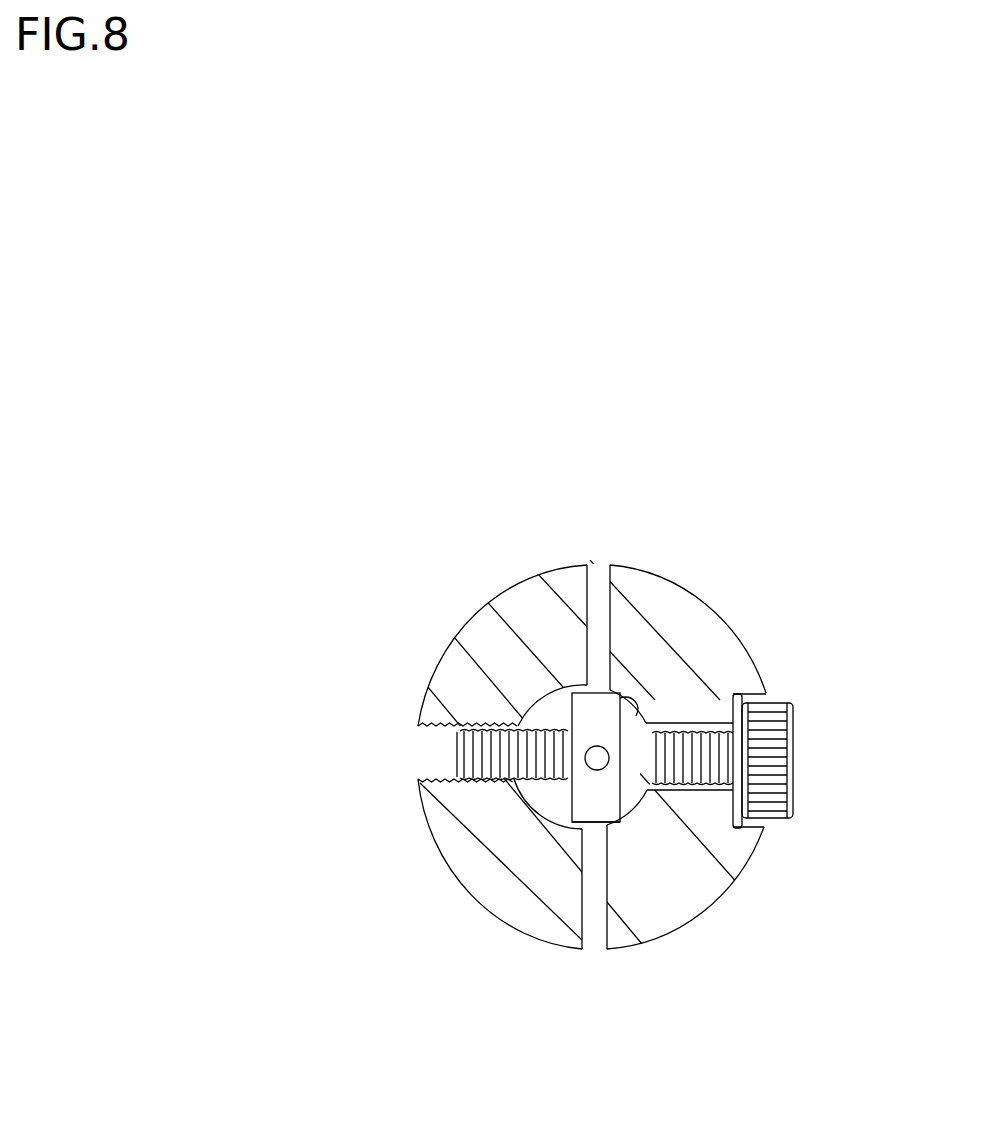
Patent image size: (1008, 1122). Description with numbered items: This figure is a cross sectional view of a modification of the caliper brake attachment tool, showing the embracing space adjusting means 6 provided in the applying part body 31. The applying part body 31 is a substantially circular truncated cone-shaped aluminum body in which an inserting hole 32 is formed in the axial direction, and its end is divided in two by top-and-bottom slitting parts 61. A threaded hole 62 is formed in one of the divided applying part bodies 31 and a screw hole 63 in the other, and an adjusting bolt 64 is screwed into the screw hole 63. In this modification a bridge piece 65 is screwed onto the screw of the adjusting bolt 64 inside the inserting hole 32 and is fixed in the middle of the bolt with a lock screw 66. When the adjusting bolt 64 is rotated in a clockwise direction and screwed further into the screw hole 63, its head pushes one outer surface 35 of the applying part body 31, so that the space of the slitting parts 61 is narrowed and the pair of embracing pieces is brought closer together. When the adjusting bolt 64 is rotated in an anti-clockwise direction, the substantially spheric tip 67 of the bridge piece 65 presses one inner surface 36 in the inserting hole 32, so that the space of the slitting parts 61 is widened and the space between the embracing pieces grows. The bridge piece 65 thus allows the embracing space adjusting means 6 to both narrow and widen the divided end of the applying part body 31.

The embracing space adjusting means 6 is at (800, 502).
The applying part body 31 is at (497, 642).
The inserting hole 32 is at (578, 836).
The outer surface 35 is at (747, 797).
The inner surface 36 is at (628, 703).
The slitting parts 61 is at (598, 572).
The threaded hole 62 is at (632, 795).
The screw hole 63 is at (430, 760).
The adjusting bolt 64 is at (792, 733).
The bridge piece 65 is at (604, 814).
The lock screw 66 is at (592, 762).
The tip 67 is at (632, 796).